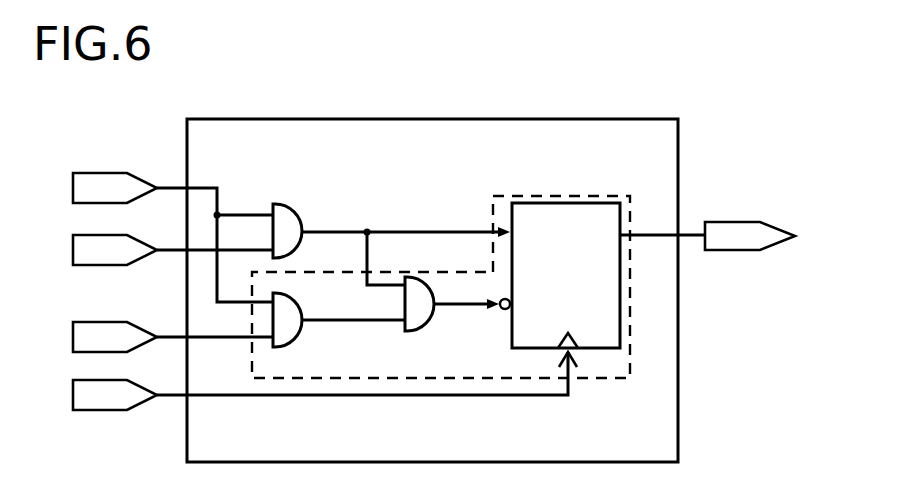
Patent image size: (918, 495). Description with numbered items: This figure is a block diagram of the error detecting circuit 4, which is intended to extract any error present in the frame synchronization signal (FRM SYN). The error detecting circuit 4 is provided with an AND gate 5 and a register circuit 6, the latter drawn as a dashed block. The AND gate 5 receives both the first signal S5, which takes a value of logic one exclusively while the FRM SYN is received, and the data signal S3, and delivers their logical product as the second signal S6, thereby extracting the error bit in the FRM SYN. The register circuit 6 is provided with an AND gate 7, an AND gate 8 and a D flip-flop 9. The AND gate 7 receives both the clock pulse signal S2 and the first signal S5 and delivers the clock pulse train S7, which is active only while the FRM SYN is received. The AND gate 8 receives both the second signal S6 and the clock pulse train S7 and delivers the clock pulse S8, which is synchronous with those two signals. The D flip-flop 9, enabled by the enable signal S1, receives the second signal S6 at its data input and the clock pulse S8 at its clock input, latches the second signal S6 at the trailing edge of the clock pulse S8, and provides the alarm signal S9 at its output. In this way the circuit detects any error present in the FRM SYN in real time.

The error detecting circuit 4 is at (410, 118).
The AND gate 5 is at (297, 203).
The register circuit 6 is at (441, 325).
The AND gate 7 is at (296, 293).
The AND gate 8 is at (418, 278).
The D flip-flop 9 is at (582, 203).
The enable signal S1 is at (300, 381).
The clock pulse signal S2 is at (148, 337).
The data signal S3 is at (148, 250).
The first signal S5 is at (148, 237).
The second signal S6 is at (395, 230).
The clock pulse train S7 is at (362, 322).
The clock pulse S8 is at (484, 305).
The alarm signal S9 is at (745, 222).